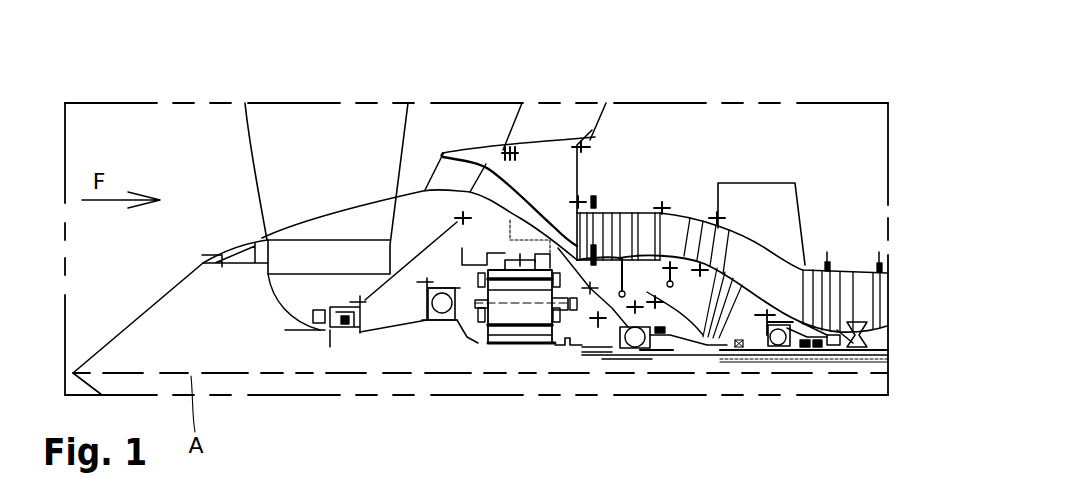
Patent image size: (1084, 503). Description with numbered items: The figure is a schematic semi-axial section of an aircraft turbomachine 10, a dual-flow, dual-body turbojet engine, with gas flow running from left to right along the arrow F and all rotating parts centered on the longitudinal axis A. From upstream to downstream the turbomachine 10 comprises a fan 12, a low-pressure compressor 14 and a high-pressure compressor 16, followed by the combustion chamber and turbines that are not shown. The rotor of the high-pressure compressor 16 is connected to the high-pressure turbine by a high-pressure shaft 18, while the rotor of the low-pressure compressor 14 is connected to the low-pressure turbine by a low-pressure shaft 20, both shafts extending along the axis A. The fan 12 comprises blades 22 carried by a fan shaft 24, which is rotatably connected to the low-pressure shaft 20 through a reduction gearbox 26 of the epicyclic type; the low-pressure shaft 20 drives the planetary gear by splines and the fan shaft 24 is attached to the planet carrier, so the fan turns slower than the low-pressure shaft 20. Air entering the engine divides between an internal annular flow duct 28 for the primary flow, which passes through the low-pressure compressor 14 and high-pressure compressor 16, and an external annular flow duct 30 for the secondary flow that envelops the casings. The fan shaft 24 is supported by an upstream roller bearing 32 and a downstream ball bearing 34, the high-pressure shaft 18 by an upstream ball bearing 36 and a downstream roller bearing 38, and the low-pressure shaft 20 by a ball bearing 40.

The aircraft turbomachine 10 is at (735, 137).
The fan 12 is at (243, 122).
The low-pressure compressor 14 is at (627, 210).
The high-pressure compressor 16 is at (858, 262).
The high-pressure shaft 18 is at (834, 364).
The low-pressure shaft 20 is at (680, 364).
The blades 22 is at (268, 150).
The fan shaft 24 is at (296, 336).
The reduction gearbox 26 is at (472, 324).
The internal annular flow duct 28 is at (765, 250).
The external annular flow duct 30 is at (421, 142).
The upstream bearing 32 is at (346, 334).
The downstream bearing 34 is at (445, 320).
The upstream bearing 36 is at (778, 350).
The downstream bearing 38 is at (803, 350).
The bearing 40 is at (636, 350).